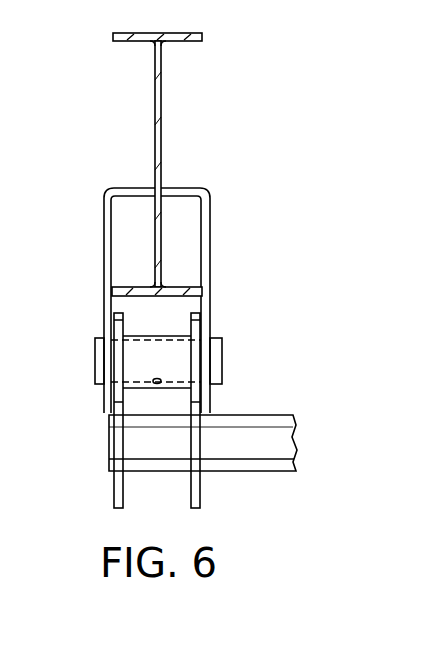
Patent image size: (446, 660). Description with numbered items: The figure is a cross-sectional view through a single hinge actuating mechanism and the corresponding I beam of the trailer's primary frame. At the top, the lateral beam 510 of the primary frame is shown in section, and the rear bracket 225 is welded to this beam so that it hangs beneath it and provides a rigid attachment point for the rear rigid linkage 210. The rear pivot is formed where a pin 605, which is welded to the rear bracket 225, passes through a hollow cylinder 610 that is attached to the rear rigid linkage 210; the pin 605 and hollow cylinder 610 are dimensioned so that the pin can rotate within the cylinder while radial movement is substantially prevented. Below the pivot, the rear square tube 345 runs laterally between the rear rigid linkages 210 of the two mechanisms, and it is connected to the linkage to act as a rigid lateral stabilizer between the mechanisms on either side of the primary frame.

The lateral beam 510 is at (162, 152).
The rear bracket 225 is at (212, 237).
The hollow cylinder 610 is at (177, 333).
The pin 605 is at (93, 363).
The rear square tube 345 is at (257, 414).
The rear rigid linkage 210 is at (202, 490).